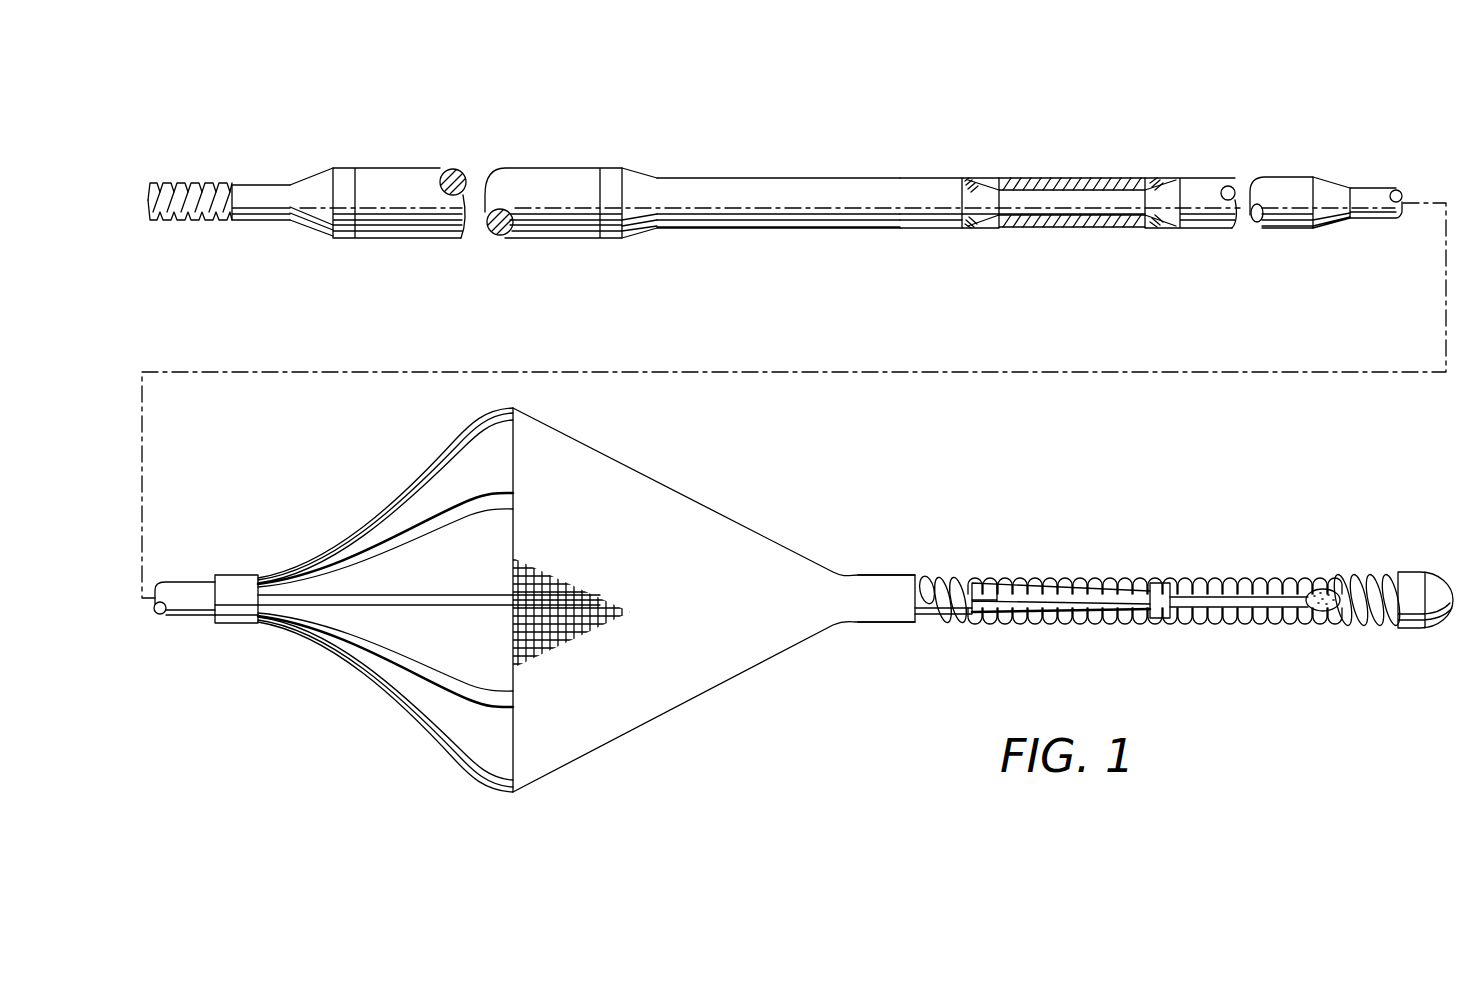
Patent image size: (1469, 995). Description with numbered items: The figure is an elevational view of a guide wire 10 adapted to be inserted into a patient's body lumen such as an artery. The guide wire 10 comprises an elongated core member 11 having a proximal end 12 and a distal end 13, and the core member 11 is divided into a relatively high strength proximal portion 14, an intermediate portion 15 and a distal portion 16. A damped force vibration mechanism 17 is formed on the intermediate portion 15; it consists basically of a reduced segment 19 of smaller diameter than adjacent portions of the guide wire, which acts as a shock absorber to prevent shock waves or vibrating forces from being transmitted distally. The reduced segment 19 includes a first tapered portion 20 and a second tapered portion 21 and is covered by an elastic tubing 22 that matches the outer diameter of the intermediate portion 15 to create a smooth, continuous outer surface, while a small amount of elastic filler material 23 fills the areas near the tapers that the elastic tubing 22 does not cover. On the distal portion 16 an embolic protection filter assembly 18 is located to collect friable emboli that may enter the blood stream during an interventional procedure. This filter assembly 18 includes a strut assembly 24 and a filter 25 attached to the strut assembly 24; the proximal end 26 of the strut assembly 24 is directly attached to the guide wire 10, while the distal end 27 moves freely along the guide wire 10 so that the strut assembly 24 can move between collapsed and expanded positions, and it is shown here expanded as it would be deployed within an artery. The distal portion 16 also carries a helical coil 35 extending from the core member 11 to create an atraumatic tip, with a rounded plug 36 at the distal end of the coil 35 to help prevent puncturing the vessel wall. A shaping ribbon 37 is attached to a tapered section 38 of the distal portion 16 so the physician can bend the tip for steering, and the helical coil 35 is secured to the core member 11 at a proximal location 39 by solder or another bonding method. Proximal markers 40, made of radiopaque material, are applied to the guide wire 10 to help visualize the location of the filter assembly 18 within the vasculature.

The guide wire 10 is at (1291, 139).
The elongated core member 11 is at (698, 180).
The proximal end 12 is at (315, 180).
The distal end 13 is at (997, 592).
The proximal portion 14 is at (540, 175).
The intermediate portion 15 is at (905, 183).
The distal portion 16 is at (178, 583).
The damped force vibration mechanism 17 is at (1072, 189).
The embolic protection filter assembly 18 is at (714, 600).
The reduced segment 19 is at (1022, 214).
The first tapered portion 20 is at (972, 188).
The second tapered portion 21 is at (1165, 222).
The elastic tubing 22 is at (1065, 228).
The elastic filler material 23 is at (1155, 178).
The strut assembly 24 is at (408, 668).
The filter 25 is at (610, 710).
The proximal end 26 is at (235, 623).
The distal end 27 is at (890, 582).
The helical coil 35 is at (1258, 574).
The rounded plug 36 is at (1432, 572).
The shaping ribbon 37 is at (1224, 603).
The tapered section 38 is at (1055, 600).
The proximal location 39 is at (928, 584).
The proximal markers 40 is at (1163, 583).